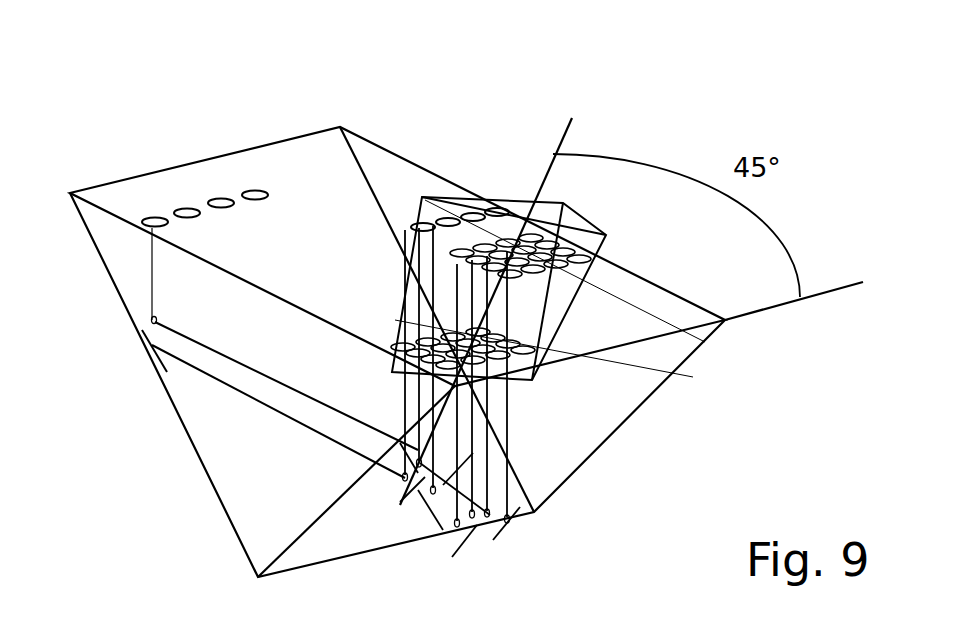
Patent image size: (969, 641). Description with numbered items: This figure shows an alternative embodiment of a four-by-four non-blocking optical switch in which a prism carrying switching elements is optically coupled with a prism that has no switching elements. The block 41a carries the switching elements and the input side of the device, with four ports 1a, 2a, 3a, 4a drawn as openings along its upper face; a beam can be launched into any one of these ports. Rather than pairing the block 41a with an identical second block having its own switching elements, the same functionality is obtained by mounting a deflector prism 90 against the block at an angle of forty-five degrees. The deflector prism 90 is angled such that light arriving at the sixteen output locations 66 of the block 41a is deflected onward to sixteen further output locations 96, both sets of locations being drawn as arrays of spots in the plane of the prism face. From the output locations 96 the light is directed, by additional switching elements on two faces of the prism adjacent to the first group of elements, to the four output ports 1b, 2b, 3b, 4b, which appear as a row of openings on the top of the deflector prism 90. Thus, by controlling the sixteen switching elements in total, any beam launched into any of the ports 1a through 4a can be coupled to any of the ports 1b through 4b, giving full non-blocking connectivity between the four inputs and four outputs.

The port 1a is at (148, 217).
The port 2a is at (178, 206).
The port 3a is at (216, 197).
The port 4a is at (257, 190).
The port 1b is at (421, 222).
The port 2b is at (448, 217).
The port 3b is at (474, 212).
The port 4b is at (498, 207).
The deflector prism 90 is at (573, 104).
The output locations 96 is at (712, 340).
The output locations 66 is at (700, 378).
The block 41a is at (248, 490).